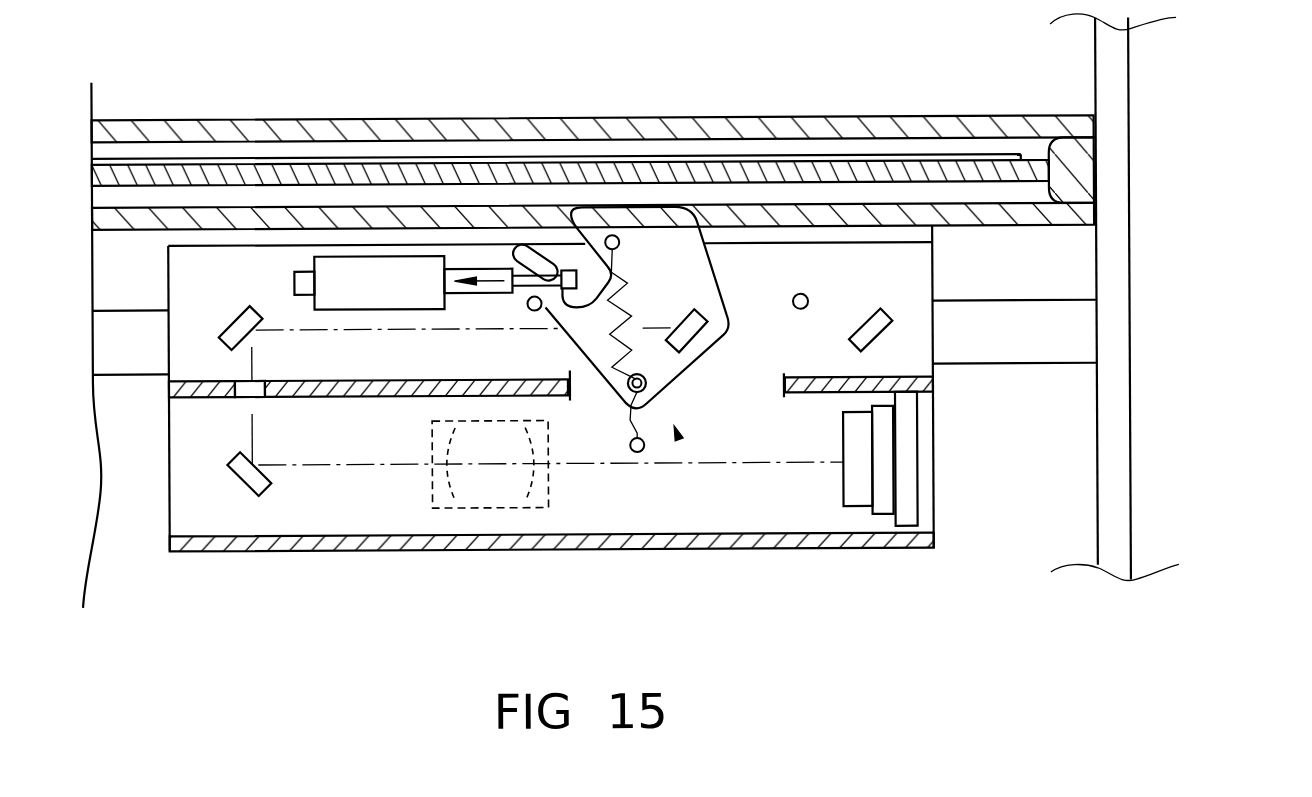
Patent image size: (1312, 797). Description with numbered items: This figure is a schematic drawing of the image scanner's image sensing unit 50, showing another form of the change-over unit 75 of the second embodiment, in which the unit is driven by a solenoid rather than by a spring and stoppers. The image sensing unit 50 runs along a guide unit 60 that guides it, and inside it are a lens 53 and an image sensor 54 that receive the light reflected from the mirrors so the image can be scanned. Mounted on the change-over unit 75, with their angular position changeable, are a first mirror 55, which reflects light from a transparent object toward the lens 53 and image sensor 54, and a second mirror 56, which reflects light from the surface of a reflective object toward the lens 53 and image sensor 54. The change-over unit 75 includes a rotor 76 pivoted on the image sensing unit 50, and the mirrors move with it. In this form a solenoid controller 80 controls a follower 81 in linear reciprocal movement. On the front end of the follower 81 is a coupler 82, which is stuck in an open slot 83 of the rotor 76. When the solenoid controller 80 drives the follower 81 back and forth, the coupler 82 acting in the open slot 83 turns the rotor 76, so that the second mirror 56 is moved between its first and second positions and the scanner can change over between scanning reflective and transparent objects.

The image sensing unit 50 is at (345, 510).
The lens 53 is at (485, 495).
The image sensor 54 is at (875, 482).
The first mirror 55 is at (870, 330).
The second mirror 56 is at (688, 338).
The guide unit 60 is at (1038, 328).
The change-over unit 75 is at (676, 431).
The rotor 76 is at (670, 250).
The solenoid controller 80 is at (380, 273).
The follower 81 is at (479, 288).
The coupler 82 is at (573, 270).
The open slot 83 is at (537, 250).